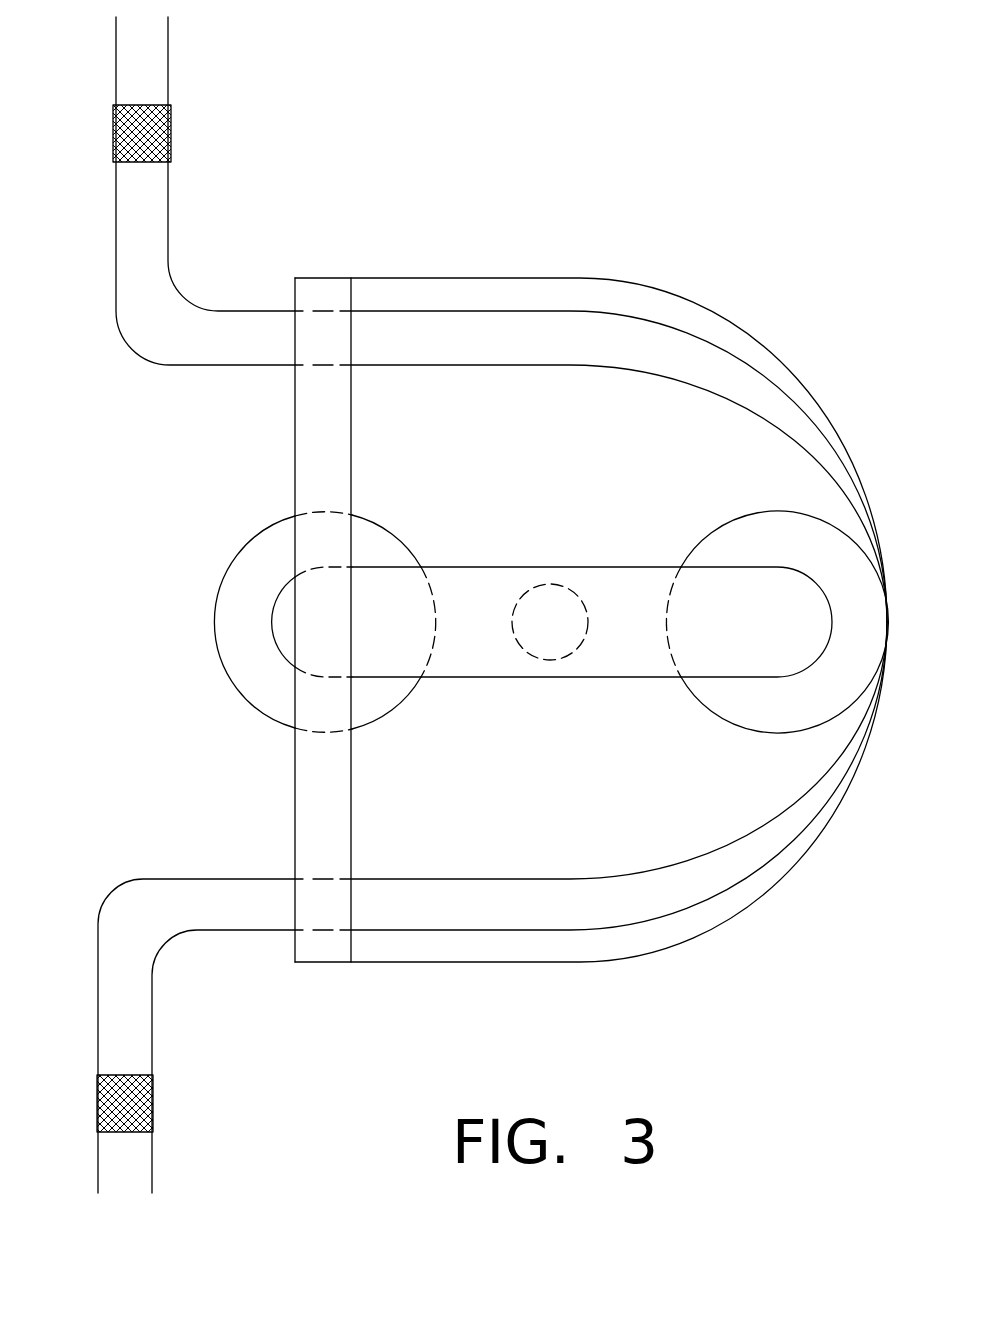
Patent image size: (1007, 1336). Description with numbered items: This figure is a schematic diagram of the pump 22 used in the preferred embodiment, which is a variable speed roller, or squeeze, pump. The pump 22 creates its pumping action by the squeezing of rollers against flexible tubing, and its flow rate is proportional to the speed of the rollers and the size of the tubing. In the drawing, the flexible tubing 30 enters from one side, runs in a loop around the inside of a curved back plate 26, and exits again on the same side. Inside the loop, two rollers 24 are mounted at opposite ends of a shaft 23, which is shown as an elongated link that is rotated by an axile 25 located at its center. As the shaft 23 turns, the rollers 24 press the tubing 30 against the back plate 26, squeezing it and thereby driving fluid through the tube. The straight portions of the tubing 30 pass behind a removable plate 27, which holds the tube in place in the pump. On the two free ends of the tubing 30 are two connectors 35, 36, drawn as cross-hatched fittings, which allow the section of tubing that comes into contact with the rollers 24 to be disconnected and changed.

The pump 22 is at (450, 605).
The shaft 23 is at (606, 566).
The rollers 24 is at (223, 578).
The axile 25 is at (558, 632).
The back plate 26 is at (580, 278).
The removable plate 27 is at (293, 385).
The flexible tubing 30 is at (450, 332).
The connector 35 is at (153, 1105).
The connector 36 is at (113, 133).